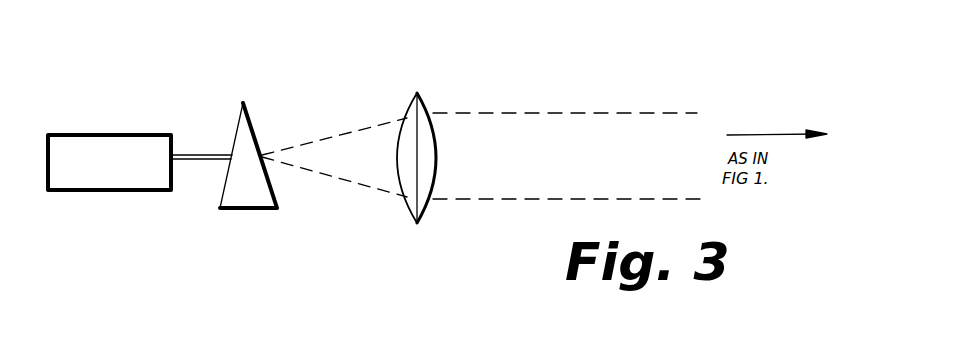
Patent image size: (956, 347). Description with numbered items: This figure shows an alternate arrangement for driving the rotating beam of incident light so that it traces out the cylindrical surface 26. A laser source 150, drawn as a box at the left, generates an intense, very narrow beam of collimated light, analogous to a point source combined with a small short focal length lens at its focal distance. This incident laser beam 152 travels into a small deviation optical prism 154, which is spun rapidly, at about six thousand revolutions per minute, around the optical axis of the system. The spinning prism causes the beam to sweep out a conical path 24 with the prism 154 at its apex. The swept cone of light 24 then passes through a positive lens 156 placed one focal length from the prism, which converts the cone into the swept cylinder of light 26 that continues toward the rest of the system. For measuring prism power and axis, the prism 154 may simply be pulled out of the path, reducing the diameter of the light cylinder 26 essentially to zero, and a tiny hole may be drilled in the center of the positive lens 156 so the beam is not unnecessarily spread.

The laser source 150 is at (123, 132).
The incident laser beam 152 is at (195, 155).
The small deviation optical prism 154 is at (230, 192).
The conical path 24 is at (325, 137).
The positive lens 156 is at (420, 95).
The cylindrical surface 26 is at (488, 115).